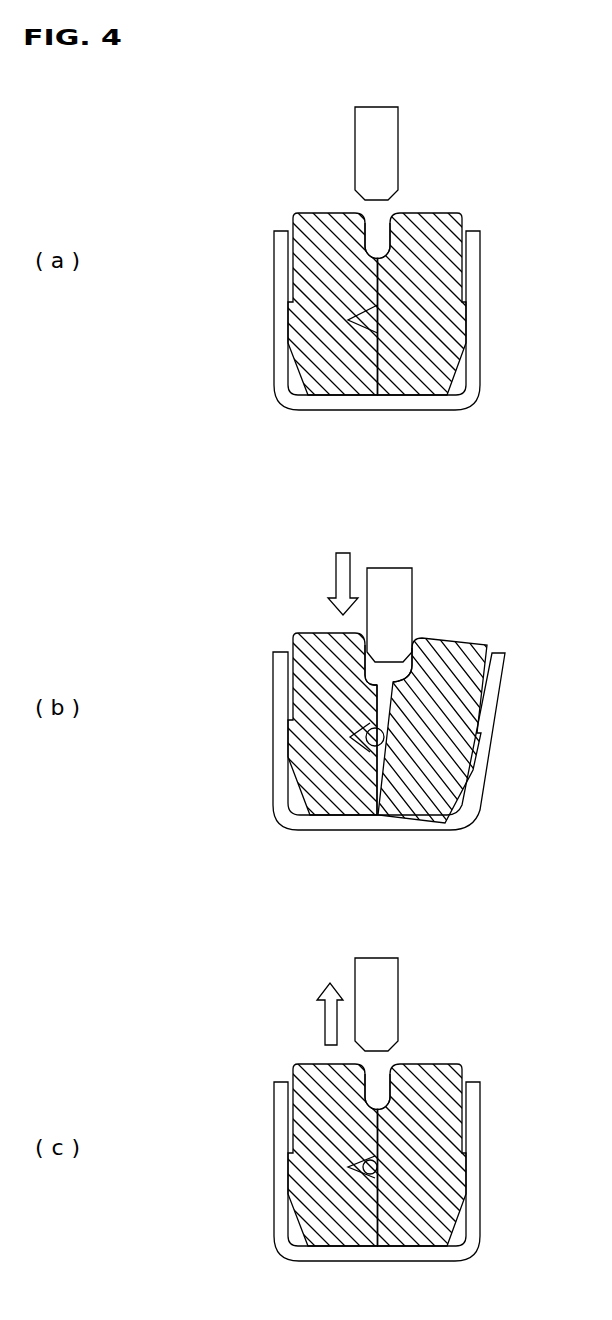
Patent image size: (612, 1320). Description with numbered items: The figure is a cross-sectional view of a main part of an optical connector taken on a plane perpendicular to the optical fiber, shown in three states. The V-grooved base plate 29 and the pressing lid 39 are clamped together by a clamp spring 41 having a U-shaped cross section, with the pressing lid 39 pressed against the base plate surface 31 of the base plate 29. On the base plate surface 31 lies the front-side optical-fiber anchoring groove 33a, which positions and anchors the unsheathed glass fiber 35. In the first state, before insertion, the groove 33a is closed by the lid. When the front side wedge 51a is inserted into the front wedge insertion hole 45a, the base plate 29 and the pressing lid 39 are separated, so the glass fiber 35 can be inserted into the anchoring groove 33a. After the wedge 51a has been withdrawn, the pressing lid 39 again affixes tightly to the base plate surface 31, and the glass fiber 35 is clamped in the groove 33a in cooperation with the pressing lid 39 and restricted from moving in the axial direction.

The front side wedge 51a is at (355, 109).
The V-grooved base plate 29 is at (318, 213).
The pressing lid 39 is at (488, 644).
The base plate surface 31 is at (378, 280).
The front wedge insertion hole 45a is at (378, 234).
The optical-fiber anchoring groove 33a is at (380, 323).
The glass fiber 35 is at (385, 737).
The clamp spring 41 is at (273, 700).